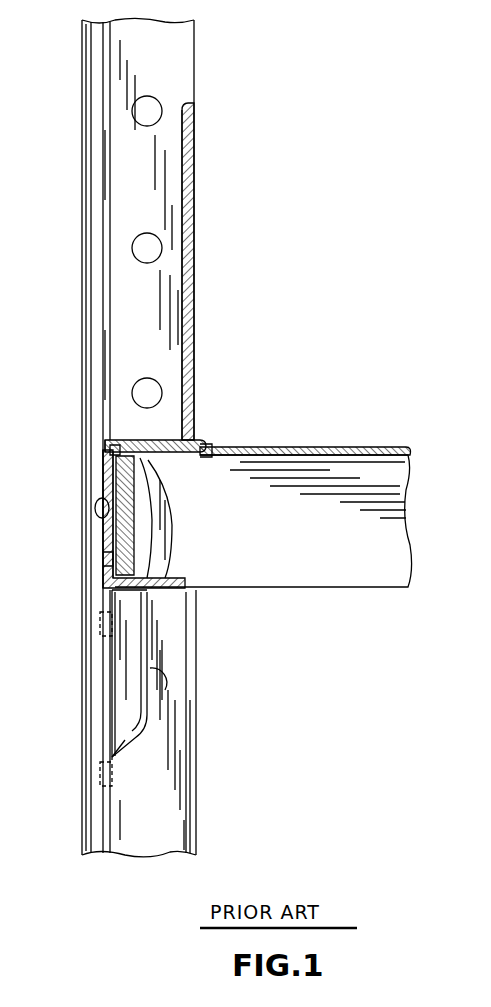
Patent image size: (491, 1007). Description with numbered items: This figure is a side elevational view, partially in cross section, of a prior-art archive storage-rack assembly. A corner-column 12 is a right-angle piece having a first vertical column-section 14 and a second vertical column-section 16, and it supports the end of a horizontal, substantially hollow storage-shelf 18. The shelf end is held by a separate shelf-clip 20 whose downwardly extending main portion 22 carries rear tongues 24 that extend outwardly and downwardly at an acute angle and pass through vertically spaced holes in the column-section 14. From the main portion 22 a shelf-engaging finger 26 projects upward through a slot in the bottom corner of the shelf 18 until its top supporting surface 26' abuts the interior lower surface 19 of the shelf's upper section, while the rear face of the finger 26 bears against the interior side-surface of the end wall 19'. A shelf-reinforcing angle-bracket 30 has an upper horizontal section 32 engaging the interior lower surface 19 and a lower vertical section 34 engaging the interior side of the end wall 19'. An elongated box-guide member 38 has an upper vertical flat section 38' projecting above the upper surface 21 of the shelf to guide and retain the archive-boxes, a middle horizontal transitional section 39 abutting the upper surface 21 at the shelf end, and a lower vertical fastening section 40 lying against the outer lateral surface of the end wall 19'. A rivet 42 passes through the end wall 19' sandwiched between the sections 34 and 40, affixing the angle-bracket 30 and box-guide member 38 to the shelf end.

The corner-column 12 is at (81, 319).
The first vertical column-section 14 is at (82, 531).
The second vertical column-section 16 is at (160, 328).
The storage-shelf 18 is at (378, 458).
The interior lower surface of shelf upper section 19 is at (322, 506).
The end wall 19' is at (72, 440).
The shelf-clip 20 is at (134, 683).
The upper surface of shelf 21 is at (303, 447).
The main portion of shelf-clip 22 is at (133, 726).
The tongues 24 is at (100, 621).
The shelf-engaging finger 26 is at (173, 519).
The top supporting surface of finger 26' is at (81, 459).
The shelf-reinforcing angle-bracket 30 is at (210, 447).
The upper horizontal section of angle-bracket 32 is at (168, 470).
The lower vertical section of angle-bracket 34 is at (140, 505).
The box-guide member 38 is at (192, 277).
The upper vertical flat section of box-guide 38' is at (249, 275).
The middle horizontal transitional section 39 is at (61, 416).
The lower vertical fastening section 40 is at (105, 560).
The rivet 42 is at (96, 505).